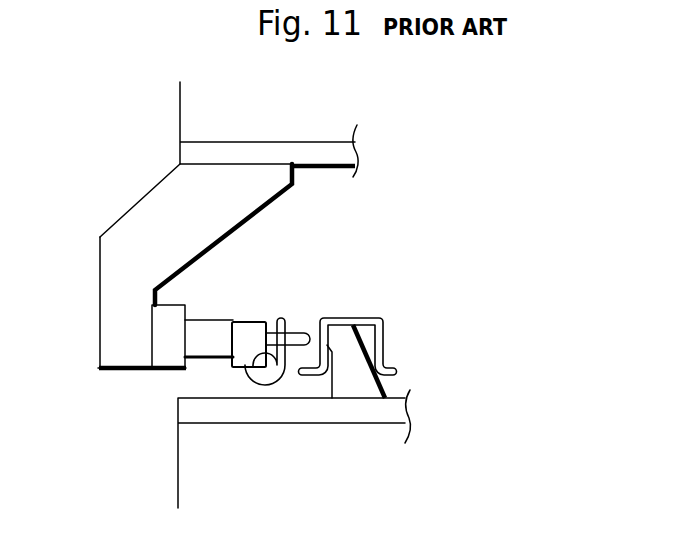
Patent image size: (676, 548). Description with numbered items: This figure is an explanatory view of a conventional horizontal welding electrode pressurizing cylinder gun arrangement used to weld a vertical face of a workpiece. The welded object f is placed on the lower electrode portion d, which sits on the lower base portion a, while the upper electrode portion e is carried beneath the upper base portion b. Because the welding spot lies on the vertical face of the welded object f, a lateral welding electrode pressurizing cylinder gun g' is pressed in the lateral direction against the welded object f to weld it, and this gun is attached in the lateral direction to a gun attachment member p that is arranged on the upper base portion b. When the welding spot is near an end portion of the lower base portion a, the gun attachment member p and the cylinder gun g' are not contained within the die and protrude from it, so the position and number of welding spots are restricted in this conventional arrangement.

The lower base portion a is at (180, 409).
The upper base portion b is at (180, 148).
The gun attachment member p is at (145, 223).
The upper electrode portion e is at (100, 264).
The hook g' is at (271, 310).
The welded object f is at (376, 318).
The lower electrode portion d is at (355, 385).